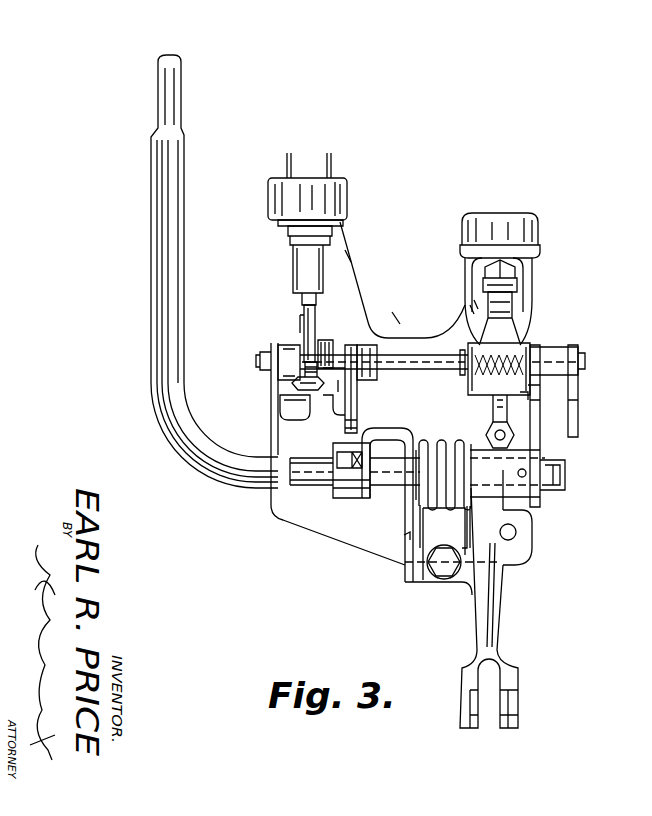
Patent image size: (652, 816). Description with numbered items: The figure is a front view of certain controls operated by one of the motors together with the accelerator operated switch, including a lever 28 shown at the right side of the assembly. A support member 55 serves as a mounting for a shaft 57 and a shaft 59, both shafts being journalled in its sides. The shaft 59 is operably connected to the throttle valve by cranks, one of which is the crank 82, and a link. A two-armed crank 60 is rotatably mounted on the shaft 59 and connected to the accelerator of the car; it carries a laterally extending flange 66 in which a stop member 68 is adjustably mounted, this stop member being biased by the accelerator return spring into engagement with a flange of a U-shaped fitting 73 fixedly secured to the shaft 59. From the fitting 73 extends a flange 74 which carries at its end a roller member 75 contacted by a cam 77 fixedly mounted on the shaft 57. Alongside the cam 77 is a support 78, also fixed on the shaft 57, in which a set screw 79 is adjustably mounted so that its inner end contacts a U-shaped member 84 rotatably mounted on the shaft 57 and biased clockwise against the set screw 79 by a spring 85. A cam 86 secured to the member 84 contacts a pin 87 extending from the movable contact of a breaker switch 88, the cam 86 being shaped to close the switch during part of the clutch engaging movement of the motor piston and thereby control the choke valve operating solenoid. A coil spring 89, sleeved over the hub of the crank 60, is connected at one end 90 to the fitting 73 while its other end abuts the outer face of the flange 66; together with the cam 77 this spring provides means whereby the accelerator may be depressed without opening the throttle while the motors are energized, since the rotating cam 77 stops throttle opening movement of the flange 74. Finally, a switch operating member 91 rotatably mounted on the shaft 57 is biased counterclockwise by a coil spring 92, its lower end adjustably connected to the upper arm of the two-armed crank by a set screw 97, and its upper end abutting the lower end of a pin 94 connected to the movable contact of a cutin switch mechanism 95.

The lever 28 is at (577, 405).
The support member 55 is at (300, 516).
The shaft 57 is at (402, 358).
The shaft 59 is at (557, 474).
The two-armed crank 60 is at (497, 608).
The laterally extending flange 66 is at (464, 582).
The stop member 68 is at (440, 572).
The U-shaped fitting 73 is at (385, 430).
The flange 74 is at (368, 480).
The roller member 75 is at (345, 478).
The cam 77 is at (357, 422).
The support 78 is at (338, 408).
The set screw 79 is at (300, 375).
The crank 82 is at (165, 200).
The U-shaped member 84 is at (292, 414).
The spring 85 is at (332, 340).
The cam 86 is at (305, 333).
The pin 87 is at (325, 300).
The breaker switch 88 is at (345, 186).
The coil spring 89 is at (445, 440).
The end of coil spring 90 is at (402, 548).
The switch operating member 91 is at (514, 335).
The coil spring 92 is at (522, 345).
The pin 94 is at (517, 288).
The cutin switch mechanism 95 is at (522, 232).
The set screw 97 is at (512, 432).